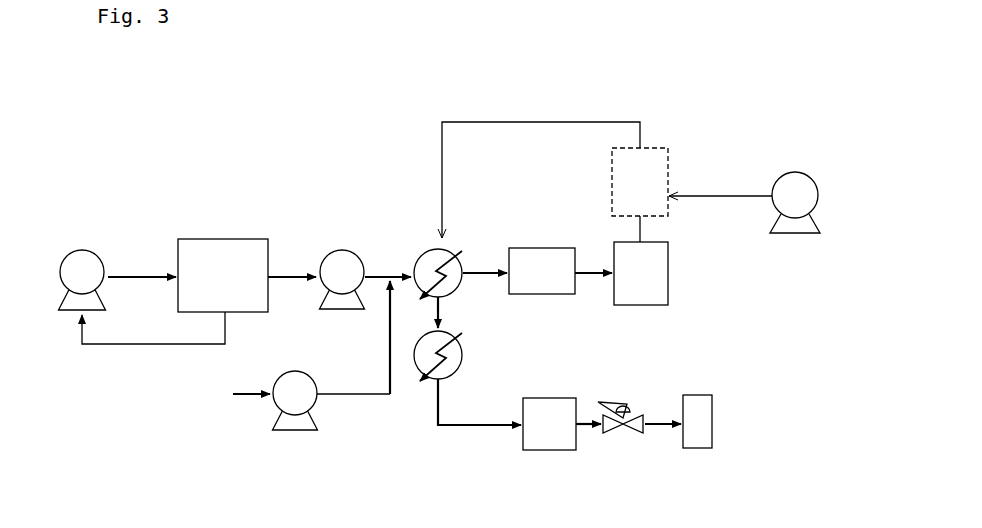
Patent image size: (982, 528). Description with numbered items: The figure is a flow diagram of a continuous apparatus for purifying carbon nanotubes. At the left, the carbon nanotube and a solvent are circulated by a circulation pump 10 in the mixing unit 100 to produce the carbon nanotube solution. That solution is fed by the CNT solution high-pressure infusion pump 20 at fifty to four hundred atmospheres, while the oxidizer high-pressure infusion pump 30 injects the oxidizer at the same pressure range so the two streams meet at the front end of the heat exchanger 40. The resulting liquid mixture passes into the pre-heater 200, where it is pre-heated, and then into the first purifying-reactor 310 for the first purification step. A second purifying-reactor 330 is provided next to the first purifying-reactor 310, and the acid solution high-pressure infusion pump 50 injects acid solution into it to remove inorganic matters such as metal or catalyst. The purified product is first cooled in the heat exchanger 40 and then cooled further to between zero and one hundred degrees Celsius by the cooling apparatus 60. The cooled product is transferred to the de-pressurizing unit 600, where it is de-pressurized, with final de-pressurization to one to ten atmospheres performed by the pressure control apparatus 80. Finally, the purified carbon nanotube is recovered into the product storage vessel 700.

The circulation pump 10 is at (93, 253).
The mixing unit 100 is at (224, 239).
The CNT solution high-pressure infusion pump 20 is at (351, 252).
The oxidizer high-pressure infusion pump 30 is at (302, 372).
The heat exchanger 40 is at (451, 256).
The cooling apparatus 60 is at (442, 334).
The pre-heater 200 is at (541, 248).
The first purifying-reactor 310 is at (668, 258).
The second purifying-reactor 330 is at (668, 180).
The acid solution high-pressure infusion pump 50 is at (805, 174).
The de-pressurizing unit 600 is at (548, 398).
The pressure control apparatus 80 is at (633, 406).
The product storage vessel 700 is at (704, 395).